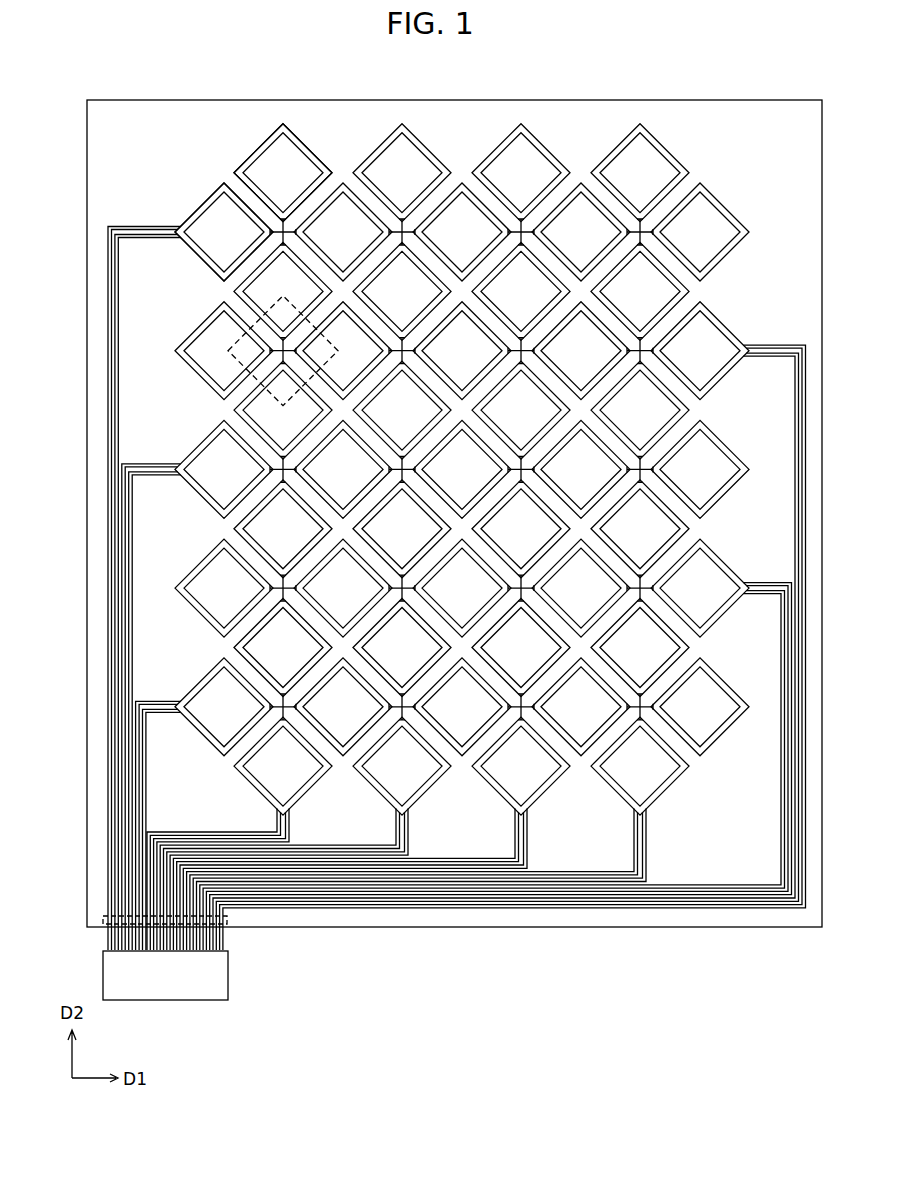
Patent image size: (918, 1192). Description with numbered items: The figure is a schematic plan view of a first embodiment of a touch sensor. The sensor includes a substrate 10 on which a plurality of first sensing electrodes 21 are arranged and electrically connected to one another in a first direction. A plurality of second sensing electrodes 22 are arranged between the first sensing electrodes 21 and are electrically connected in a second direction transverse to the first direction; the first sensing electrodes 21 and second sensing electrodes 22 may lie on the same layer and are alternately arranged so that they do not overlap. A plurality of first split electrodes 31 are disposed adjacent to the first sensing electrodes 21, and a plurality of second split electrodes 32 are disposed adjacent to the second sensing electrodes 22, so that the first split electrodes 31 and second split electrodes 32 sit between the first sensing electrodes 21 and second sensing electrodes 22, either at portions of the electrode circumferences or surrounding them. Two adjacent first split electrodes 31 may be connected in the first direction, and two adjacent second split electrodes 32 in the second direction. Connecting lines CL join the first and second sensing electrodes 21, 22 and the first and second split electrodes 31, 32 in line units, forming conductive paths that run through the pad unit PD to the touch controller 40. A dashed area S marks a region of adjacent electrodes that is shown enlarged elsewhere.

The substrate 10 is at (765, 100).
The first sensing electrodes 21 is at (215, 210).
The second sensing electrodes 22 is at (300, 157).
The first split electrodes 31 is at (196, 210).
The second split electrodes 32 is at (326, 153).
The touch controller 40 is at (231, 975).
The connecting lines CL is at (107, 238).
The area S is at (233, 366).
The pad unit PD is at (104, 925).